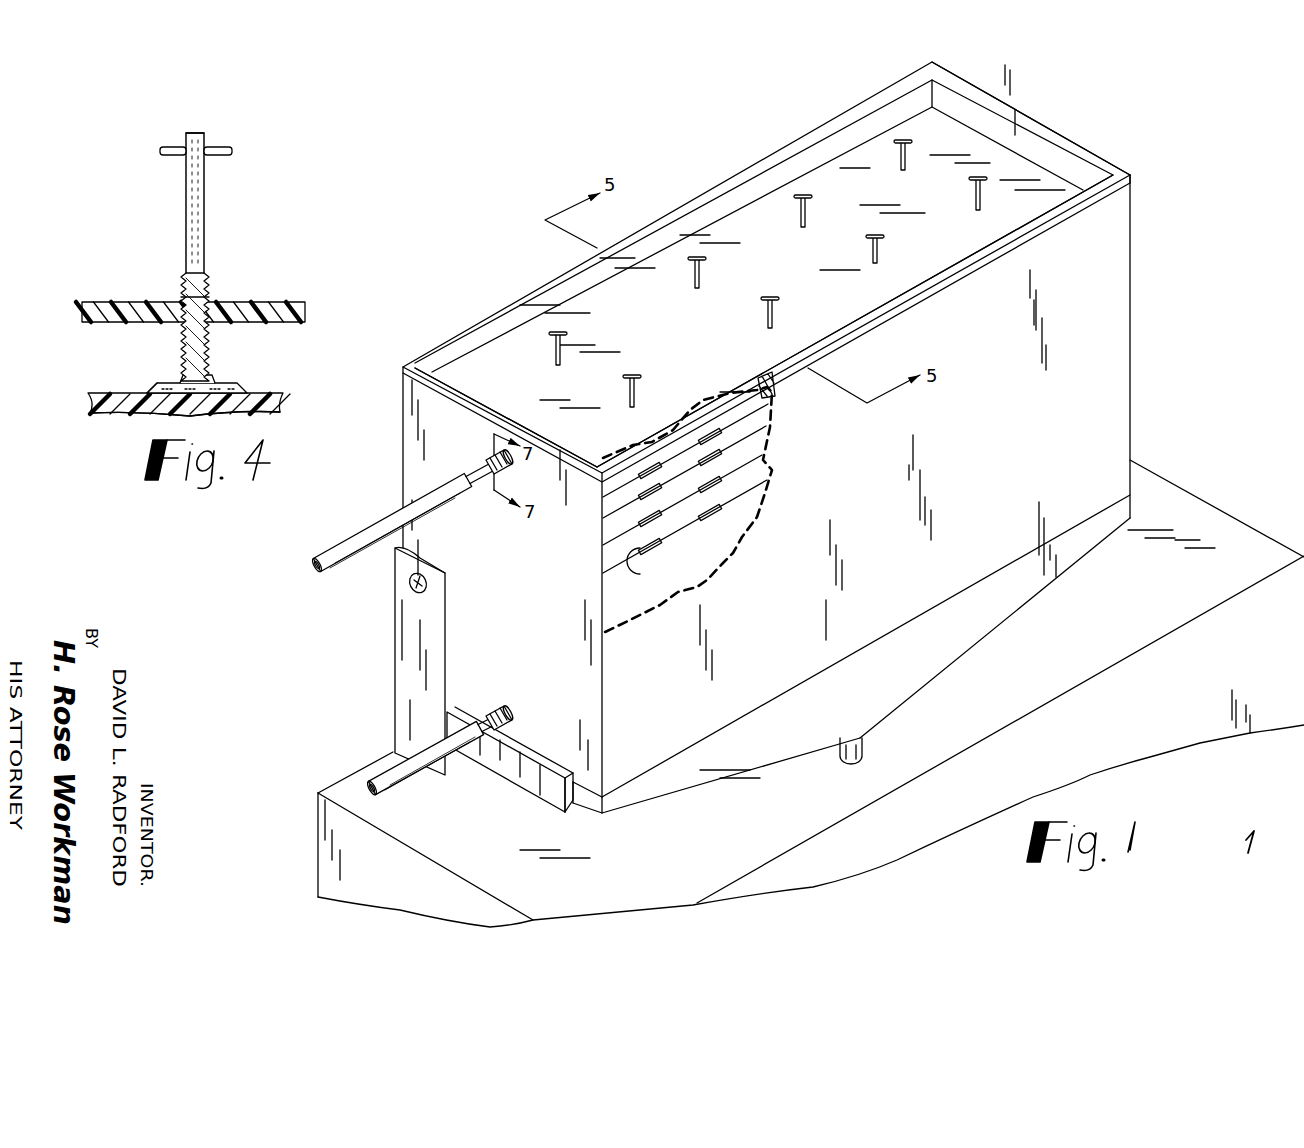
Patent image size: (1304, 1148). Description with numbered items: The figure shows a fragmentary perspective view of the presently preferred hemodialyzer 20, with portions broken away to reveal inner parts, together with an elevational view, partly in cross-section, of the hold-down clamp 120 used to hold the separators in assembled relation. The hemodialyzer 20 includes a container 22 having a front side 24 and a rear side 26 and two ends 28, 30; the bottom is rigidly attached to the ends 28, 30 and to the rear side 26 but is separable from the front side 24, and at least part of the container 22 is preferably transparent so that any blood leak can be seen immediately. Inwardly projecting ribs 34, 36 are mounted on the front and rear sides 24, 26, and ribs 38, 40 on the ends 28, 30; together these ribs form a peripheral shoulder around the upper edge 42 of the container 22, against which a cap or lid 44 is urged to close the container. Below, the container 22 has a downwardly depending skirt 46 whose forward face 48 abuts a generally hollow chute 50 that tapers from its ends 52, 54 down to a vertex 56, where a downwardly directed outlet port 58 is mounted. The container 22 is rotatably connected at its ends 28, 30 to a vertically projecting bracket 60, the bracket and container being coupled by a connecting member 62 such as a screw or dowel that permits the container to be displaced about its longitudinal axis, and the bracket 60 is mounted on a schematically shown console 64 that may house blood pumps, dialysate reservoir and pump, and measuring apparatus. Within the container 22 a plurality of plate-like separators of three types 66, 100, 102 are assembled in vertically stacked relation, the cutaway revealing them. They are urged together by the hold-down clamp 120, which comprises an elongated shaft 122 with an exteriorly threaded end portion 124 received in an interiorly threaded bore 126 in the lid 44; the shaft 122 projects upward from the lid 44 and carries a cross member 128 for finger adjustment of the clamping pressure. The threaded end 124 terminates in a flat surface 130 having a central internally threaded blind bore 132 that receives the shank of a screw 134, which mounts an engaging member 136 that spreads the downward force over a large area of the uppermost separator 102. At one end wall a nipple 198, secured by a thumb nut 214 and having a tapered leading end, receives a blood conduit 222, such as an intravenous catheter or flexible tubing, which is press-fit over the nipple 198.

In FIG. 1, the hemodialyzer 20 is at (1160, 437).
In FIG. 1, the container 22 is at (1135, 260).
In FIG. 1, the front side 24 is at (1085, 328).
In FIG. 1, the rear side 26 is at (720, 186).
In FIG. 1, the end 28 is at (1072, 142).
In FIG. 1, the end 30 is at (578, 535).
In FIG. 1, the rib 34 is at (948, 270).
In FIG. 1, the rib 36 is at (623, 281).
In FIG. 1, the rib 38 is at (993, 132).
In FIG. 1, the rib 40 is at (507, 410).
In FIG. 1, the upper edge 42 is at (1118, 168).
In FIG. 1, the cap or lid 44 is at (513, 360).
In FIG. 4, the cap or lid 44 is at (317, 313).
In FIG. 1, the skirt 46 is at (510, 775).
In FIG. 1, the forward face 48 is at (577, 808).
In FIG. 1, the chute 50 is at (718, 772).
In FIG. 1, the end of chute 52 is at (605, 813).
In FIG. 1, the end of chute 54 is at (1133, 504).
In FIG. 1, the vertex 56 is at (865, 737).
In FIG. 1, the outlet port 58 is at (852, 753).
In FIG. 1, the bracket 60 is at (407, 645).
In FIG. 1, the mounting hole 62 is at (415, 590).
In FIG. 1, the console 64 is at (1223, 513).
In FIG. 1, the separator 66 is at (717, 538).
In FIG. 1, the separator 100 is at (727, 460).
In FIG. 1, the separator 102 is at (735, 428).
In FIG. 4, the separator 102 is at (283, 410).
In FIG. 1, the hold-down clamp 120 is at (812, 222).
In FIG. 4, the hold-down clamp 120 is at (222, 248).
In FIG. 4, the shaft 122 is at (200, 222).
In FIG. 4, the threaded end portion 124 is at (181, 343).
In FIG. 4, the threaded bore 126 is at (208, 298).
In FIG. 4, the cross member 128 is at (182, 153).
In FIG. 4, the flat surface 130 is at (223, 379).
In FIG. 4, the blind bore 132 is at (203, 378).
In FIG. 4, the screw 134 is at (150, 413).
In FIG. 4, the engaging member 136 is at (167, 387).
In FIG. 1, the nipple 198 is at (487, 478).
In FIG. 1, the thumb nut 214 is at (488, 453).
In FIG. 1, the blood conduit 222 is at (407, 518).